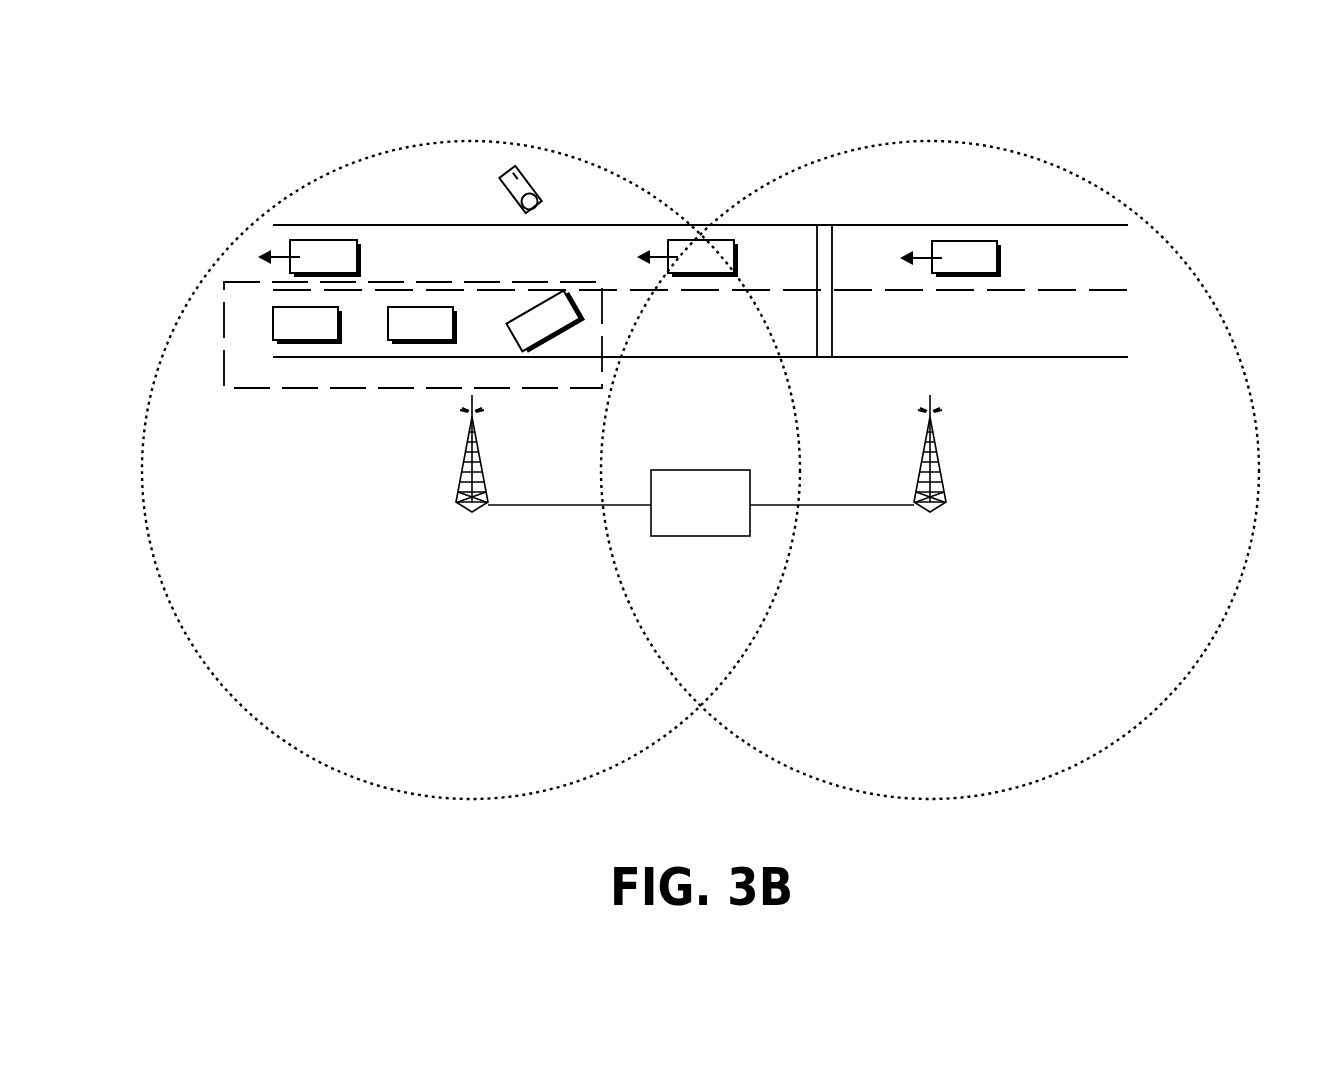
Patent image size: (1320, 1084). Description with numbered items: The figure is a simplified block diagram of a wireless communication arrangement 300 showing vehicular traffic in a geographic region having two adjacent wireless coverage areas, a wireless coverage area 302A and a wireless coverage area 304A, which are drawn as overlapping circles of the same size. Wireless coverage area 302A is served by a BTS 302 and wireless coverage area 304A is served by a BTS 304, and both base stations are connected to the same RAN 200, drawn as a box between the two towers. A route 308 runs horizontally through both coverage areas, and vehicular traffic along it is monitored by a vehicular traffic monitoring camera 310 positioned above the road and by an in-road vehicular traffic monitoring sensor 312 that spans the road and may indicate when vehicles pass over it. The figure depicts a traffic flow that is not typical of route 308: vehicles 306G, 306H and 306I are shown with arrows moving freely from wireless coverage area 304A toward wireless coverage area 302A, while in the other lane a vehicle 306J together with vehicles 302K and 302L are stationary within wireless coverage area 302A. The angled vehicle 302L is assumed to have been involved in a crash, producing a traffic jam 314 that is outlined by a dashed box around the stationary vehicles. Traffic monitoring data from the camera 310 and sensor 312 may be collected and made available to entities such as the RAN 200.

The wireless communication system 300 is at (1216, 102).
The vehicular traffic monitoring camera 310 is at (513, 177).
The vehicle 306G is at (318, 258).
The vehicle 306H is at (697, 257).
The vehicle 306I is at (958, 258).
The vehicle 306J is at (312, 328).
The vehicle 302K is at (425, 328).
The vehicle 302L is at (548, 322).
The in-road vehicular traffic monitoring sensor 312 is at (818, 226).
The route 308 is at (1095, 357).
The traffic jam 314 is at (228, 388).
The BTS 302 is at (472, 508).
The BTS 304 is at (930, 508).
The RAN 200 is at (701, 503).
The wireless coverage area 302A is at (327, 716).
The wireless coverage area 304A is at (1076, 726).